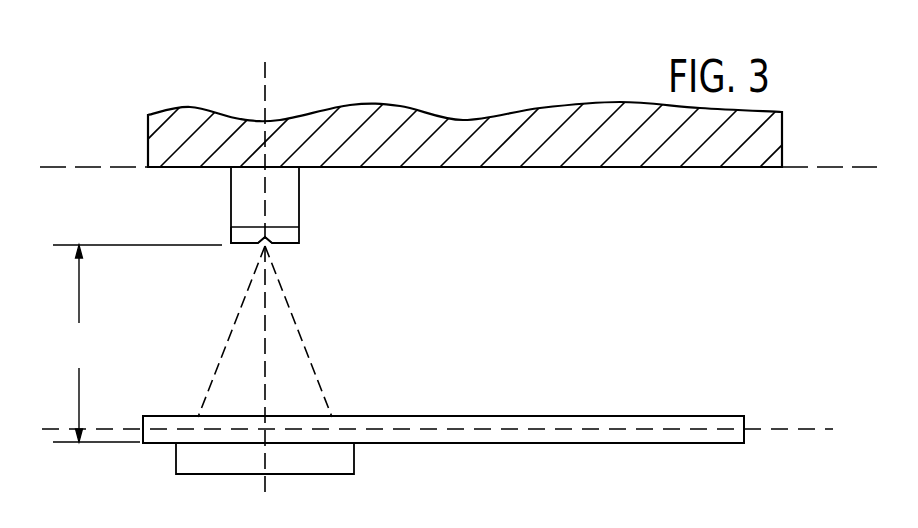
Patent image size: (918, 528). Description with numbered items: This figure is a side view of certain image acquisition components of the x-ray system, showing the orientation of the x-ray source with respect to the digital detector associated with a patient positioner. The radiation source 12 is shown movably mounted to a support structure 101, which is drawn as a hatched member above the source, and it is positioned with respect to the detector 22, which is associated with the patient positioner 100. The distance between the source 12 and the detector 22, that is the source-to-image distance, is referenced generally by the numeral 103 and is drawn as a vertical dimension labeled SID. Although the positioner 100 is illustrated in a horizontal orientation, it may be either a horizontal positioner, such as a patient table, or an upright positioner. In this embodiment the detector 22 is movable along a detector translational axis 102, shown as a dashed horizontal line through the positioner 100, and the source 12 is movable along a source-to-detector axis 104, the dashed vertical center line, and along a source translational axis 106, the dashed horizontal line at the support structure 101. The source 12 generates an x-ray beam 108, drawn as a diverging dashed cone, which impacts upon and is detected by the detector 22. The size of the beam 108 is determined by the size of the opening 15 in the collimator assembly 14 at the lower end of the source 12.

The radiation source 12 is at (300, 202).
The collimator assembly 14 is at (231, 233).
The opening 15 is at (268, 234).
The detector 22 is at (357, 452).
The patient positioner 100 is at (440, 416).
The support structure 101 is at (462, 167).
The detector translational axis 102 is at (802, 429).
The SID 103 is at (95, 319).
The source-to-detector axis 104 is at (266, 80).
The source translational axis 106 is at (88, 167).
The x-ray beam 108 is at (298, 325).